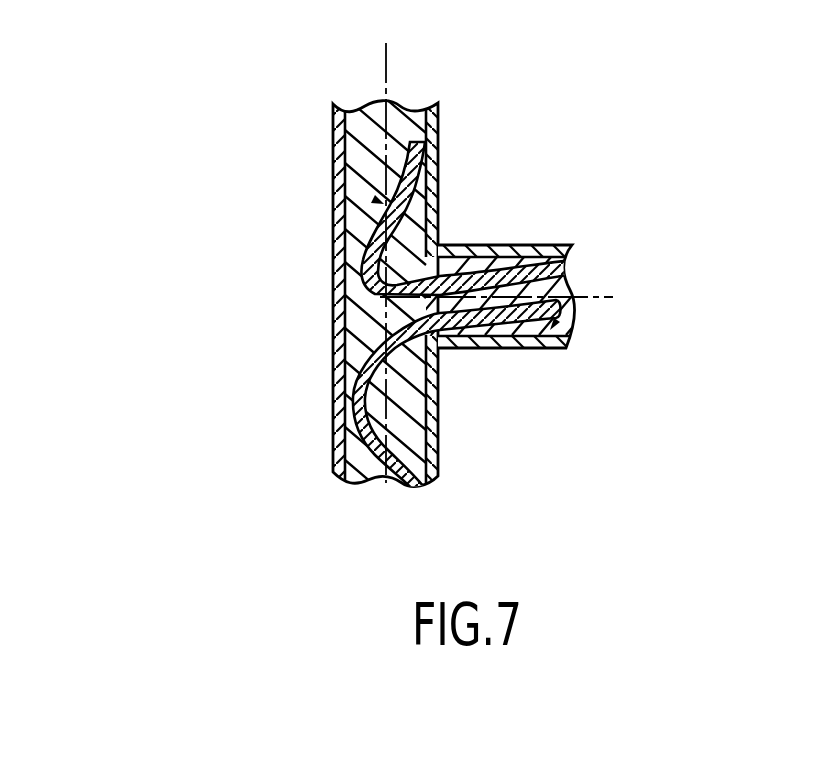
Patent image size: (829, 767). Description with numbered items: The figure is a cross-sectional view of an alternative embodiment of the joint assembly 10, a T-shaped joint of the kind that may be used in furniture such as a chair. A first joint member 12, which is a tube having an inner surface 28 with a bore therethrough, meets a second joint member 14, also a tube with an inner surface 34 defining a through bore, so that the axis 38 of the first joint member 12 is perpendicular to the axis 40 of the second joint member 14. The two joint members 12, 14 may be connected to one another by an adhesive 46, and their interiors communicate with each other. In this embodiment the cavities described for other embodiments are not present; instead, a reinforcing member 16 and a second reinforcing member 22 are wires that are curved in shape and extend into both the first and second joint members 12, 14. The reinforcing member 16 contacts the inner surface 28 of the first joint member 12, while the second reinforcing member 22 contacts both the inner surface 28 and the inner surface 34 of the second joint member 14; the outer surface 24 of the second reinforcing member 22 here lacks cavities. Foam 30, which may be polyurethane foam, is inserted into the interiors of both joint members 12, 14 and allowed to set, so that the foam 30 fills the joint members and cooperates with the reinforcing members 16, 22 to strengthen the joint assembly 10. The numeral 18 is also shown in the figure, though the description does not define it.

The joint assembly 10 is at (479, 279).
The first joint member 12 is at (426, 305).
The second joint member 14 is at (477, 225).
The reinforcing member 16 is at (398, 423).
The core of first panel 18 is at (372, 385).
The second reinforcing member 22 is at (412, 157).
The outer surface 24 is at (376, 201).
The inner surface 28 is at (353, 464).
The foam 30 is at (387, 120).
The inner surface 34 is at (553, 327).
The axis 38 is at (386, 73).
The axis 40 is at (598, 297).
The adhesive 46 is at (440, 247).